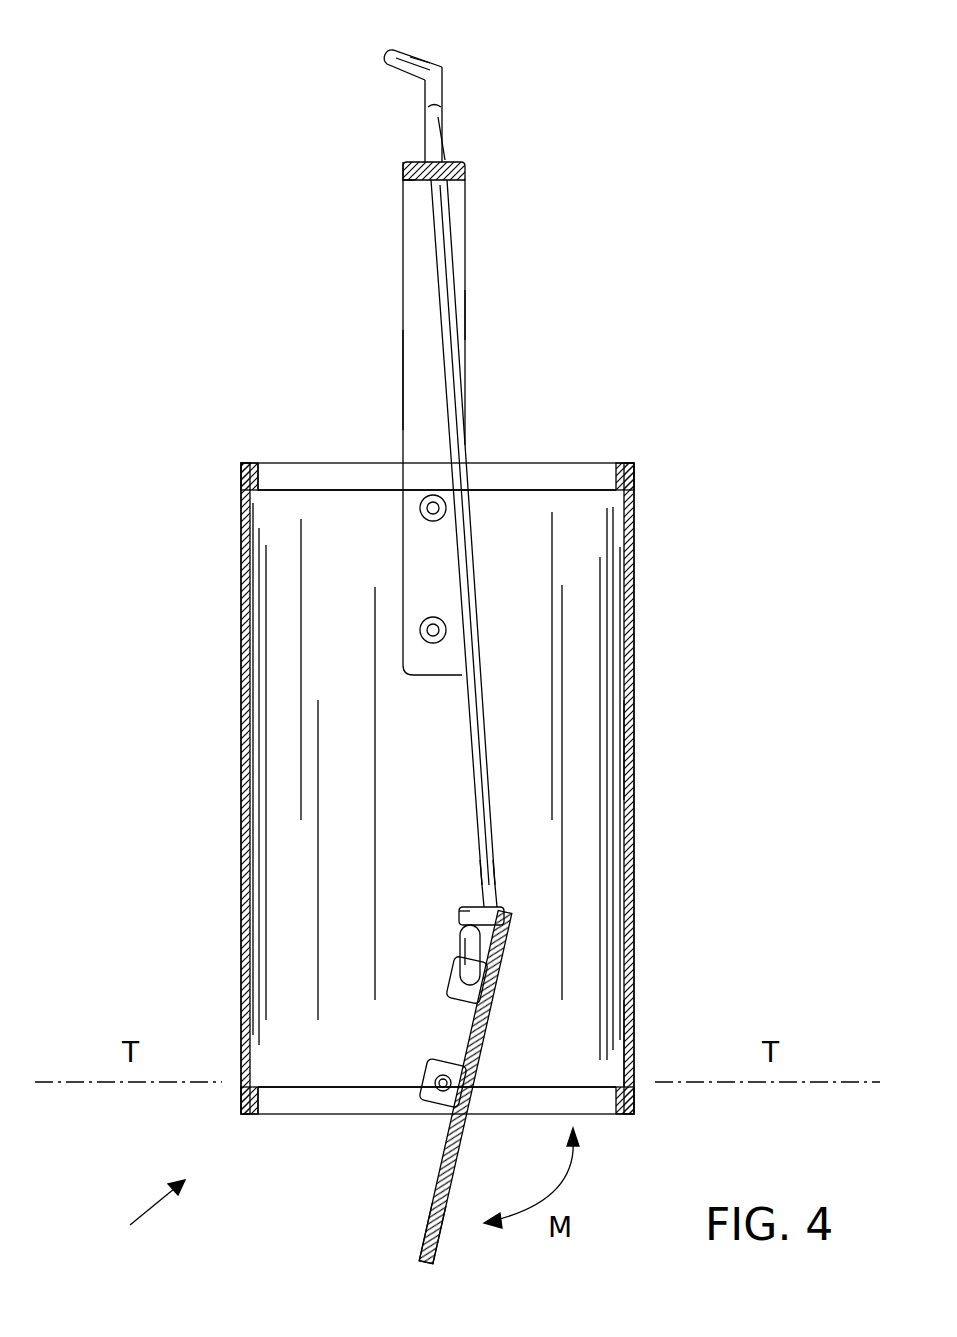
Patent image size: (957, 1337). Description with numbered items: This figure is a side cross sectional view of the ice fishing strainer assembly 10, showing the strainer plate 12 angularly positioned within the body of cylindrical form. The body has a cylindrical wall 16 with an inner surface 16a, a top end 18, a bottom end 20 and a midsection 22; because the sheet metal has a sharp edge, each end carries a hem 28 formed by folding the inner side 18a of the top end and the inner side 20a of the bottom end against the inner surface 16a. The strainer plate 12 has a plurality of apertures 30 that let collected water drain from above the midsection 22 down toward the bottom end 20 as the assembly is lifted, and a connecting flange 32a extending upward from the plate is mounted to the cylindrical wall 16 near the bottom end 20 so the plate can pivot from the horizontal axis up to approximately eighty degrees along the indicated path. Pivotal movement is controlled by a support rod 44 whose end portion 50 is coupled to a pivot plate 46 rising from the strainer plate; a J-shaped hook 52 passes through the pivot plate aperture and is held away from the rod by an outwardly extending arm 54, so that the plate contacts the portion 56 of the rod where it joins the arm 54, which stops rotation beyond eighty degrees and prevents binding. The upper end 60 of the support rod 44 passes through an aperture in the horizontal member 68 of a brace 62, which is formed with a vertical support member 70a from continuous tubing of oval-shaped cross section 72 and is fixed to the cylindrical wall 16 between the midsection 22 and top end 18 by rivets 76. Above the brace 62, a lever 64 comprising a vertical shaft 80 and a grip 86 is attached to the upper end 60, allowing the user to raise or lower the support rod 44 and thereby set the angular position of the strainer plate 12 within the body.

The ice fishing strainer assembly 10 is at (141, 1220).
The strainer plate 12 is at (418, 1248).
The cylindrical wall 16 is at (241, 712).
The inner surface of the cylindrical wall 16a is at (518, 508).
The top end 18 is at (634, 548).
The inner side of the top end 18a is at (634, 470).
The bottom end 20 is at (634, 1020).
The inner side of the bottom end 20a is at (634, 1113).
The midsection 22 is at (634, 747).
The hem 28 is at (246, 478).
The apertures 30 is at (432, 1183).
The connecting flange 32a is at (423, 1092).
The support rod 44 is at (440, 280).
The pivot plate 46 is at (452, 985).
The end portion of the support rod 50 is at (493, 850).
The J-shaped hook 52 is at (462, 935).
The outwardly extending arm 54 is at (460, 905).
The portion of the support rod 56 is at (504, 914).
The upper end of the support rod 60 is at (450, 220).
The brace 62 is at (466, 312).
The lever 64 is at (443, 67).
The horizontal member 68 is at (466, 164).
The vertical support member 70a is at (403, 383).
The oval-shaped cross section 72 is at (403, 163).
The rivets 76 is at (422, 500).
The vertical shaft 80 is at (445, 92).
The grip 86 is at (420, 60).